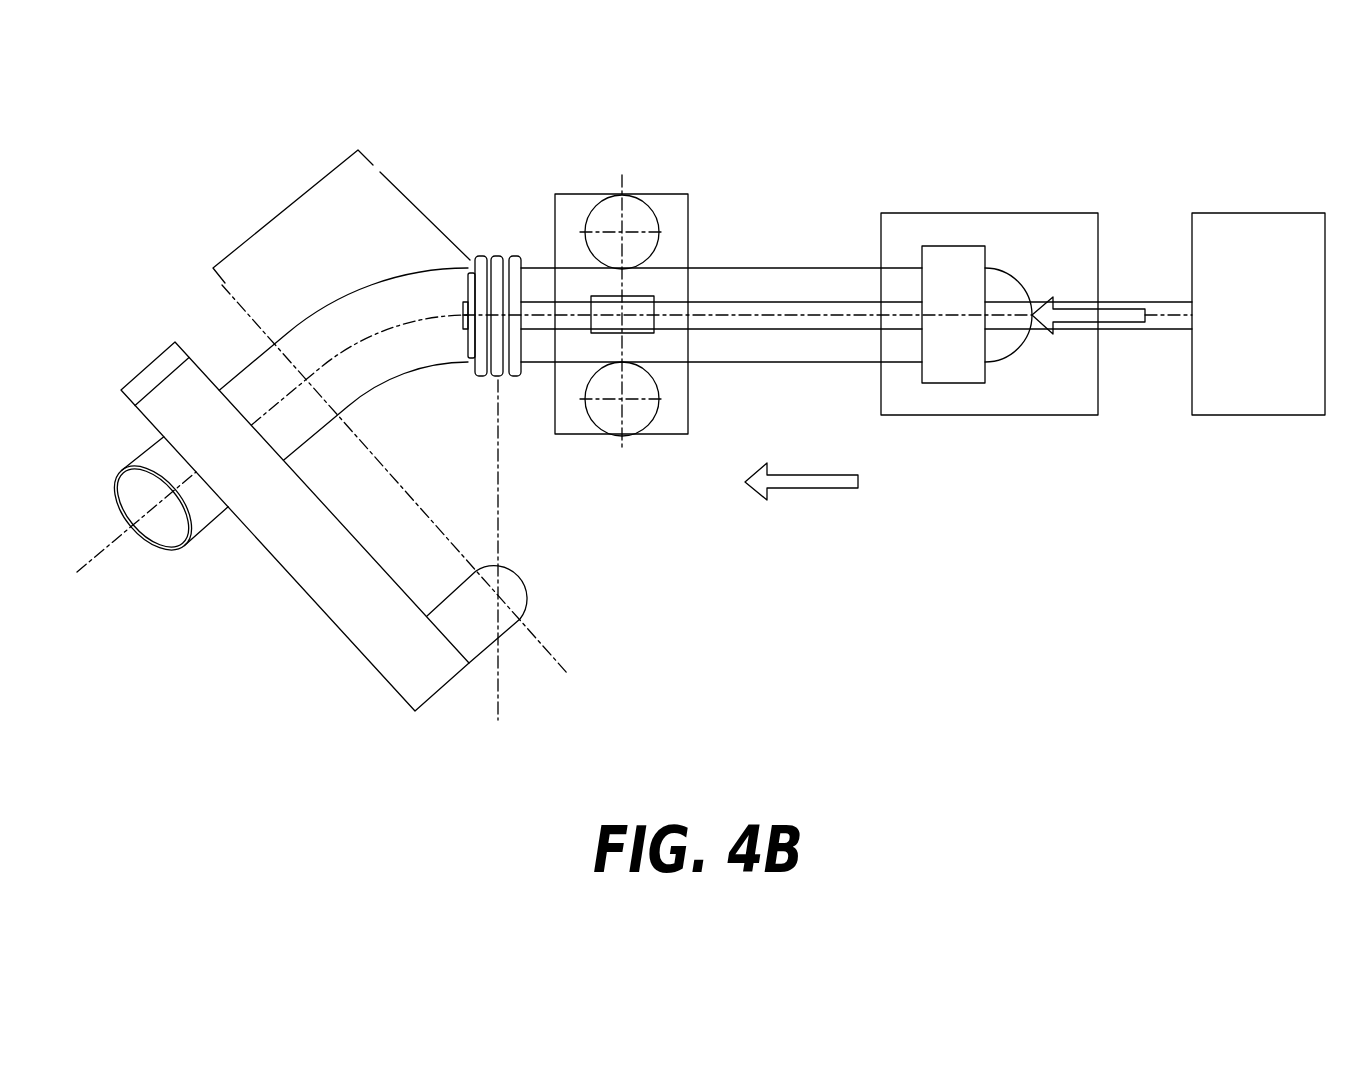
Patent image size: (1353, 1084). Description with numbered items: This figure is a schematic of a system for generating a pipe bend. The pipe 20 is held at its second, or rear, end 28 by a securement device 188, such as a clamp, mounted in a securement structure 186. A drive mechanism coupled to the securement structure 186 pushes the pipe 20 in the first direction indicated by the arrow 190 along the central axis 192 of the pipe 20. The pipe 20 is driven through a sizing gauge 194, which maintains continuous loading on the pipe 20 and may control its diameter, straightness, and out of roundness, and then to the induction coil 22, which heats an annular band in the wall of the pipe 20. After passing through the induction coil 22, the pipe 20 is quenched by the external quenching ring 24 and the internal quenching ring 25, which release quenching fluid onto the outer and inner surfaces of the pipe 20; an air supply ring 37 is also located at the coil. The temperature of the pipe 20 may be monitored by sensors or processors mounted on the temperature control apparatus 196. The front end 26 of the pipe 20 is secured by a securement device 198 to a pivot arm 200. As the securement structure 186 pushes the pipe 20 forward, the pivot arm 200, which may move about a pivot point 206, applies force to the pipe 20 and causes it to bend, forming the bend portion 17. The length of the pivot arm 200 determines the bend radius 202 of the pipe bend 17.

The bend portion 17 is at (286, 208).
The securement device 198 is at (157, 402).
The pivot arm 200 is at (326, 608).
The bend radius 202 is at (402, 487).
The pivot point 206 is at (498, 595).
The central axis 192 is at (410, 323).
The front end 26 is at (158, 535).
The induction coil 22 is at (477, 257).
The air supply ring 37 is at (512, 257).
The external quenching ring 24 is at (505, 377).
The internal quenching ring 25 is at (468, 345).
The pipe 20 is at (748, 365).
The sizing gauge 194 is at (652, 410).
The arrow 190 is at (810, 490).
The securement structure 186 is at (1062, 416).
The securement device 188 is at (957, 372).
The second end 28 is at (990, 267).
The temperature control apparatus 196 is at (1249, 212).